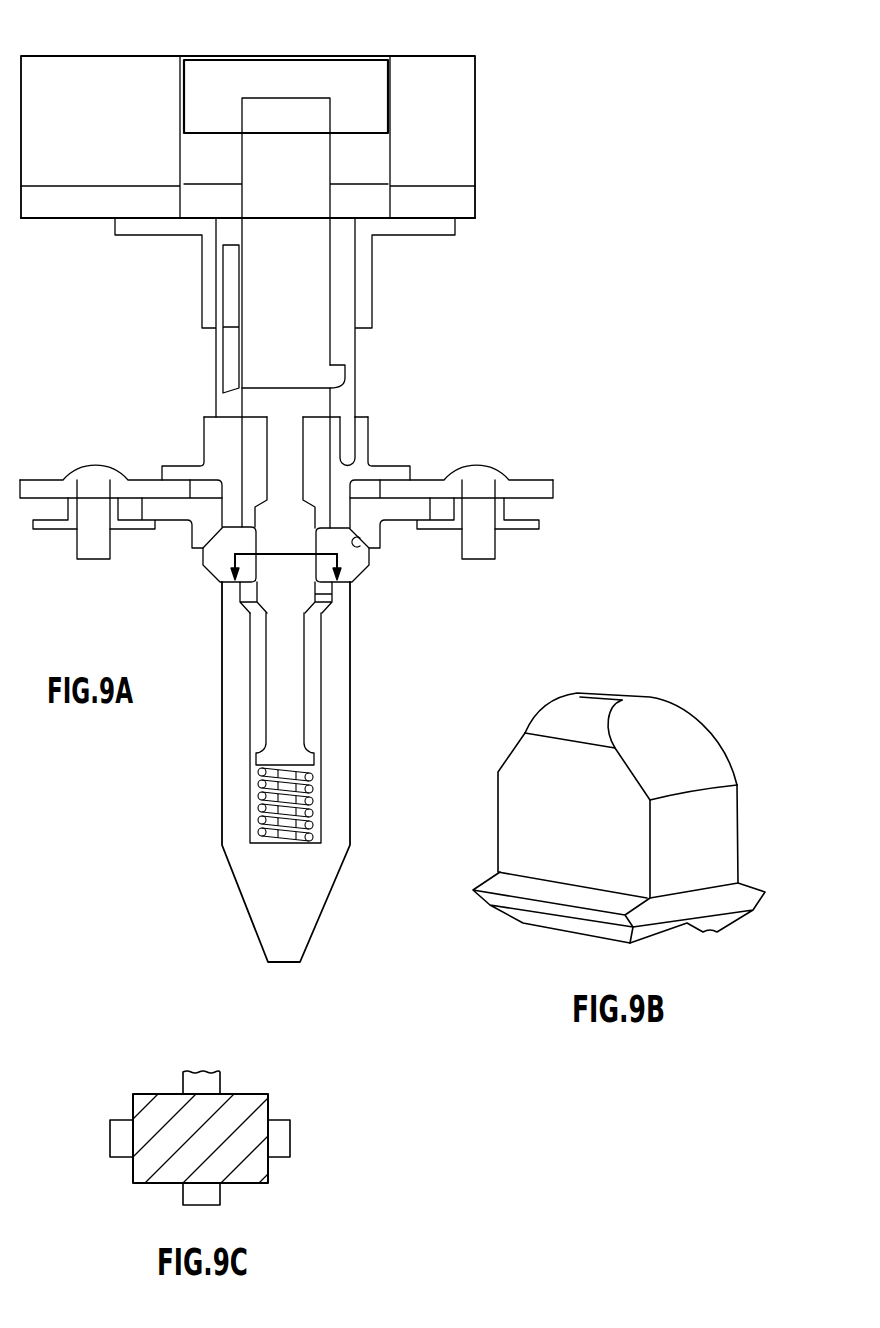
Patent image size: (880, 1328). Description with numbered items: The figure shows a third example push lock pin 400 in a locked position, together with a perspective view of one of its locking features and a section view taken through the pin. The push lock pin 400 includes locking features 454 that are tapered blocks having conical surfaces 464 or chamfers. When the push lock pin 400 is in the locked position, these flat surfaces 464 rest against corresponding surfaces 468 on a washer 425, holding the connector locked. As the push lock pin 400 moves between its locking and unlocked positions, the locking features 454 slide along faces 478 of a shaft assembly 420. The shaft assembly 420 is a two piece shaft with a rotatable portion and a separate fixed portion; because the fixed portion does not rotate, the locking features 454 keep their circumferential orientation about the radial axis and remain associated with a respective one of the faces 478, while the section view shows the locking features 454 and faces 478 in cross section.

In FIG. 9A, the push lock pin 400 is at (585, 100).
In FIG. 9A, the shaft assembly 420 is at (295, 643).
In FIG. 9A, the washer 425 is at (368, 512).
In FIG. 9A, the locking feature 454 is at (358, 570).
In FIG. 9B, the locking feature 454 is at (603, 702).
In FIG. 9C, the locking feature 454 is at (222, 1080).
In FIG. 9B, the conical surface 464 is at (685, 737).
In FIG. 9A, the corresponding surface 468 is at (369, 548).
In FIG. 9A, the face 478 is at (332, 594).
In FIG. 9C, the face 478 is at (270, 1105).